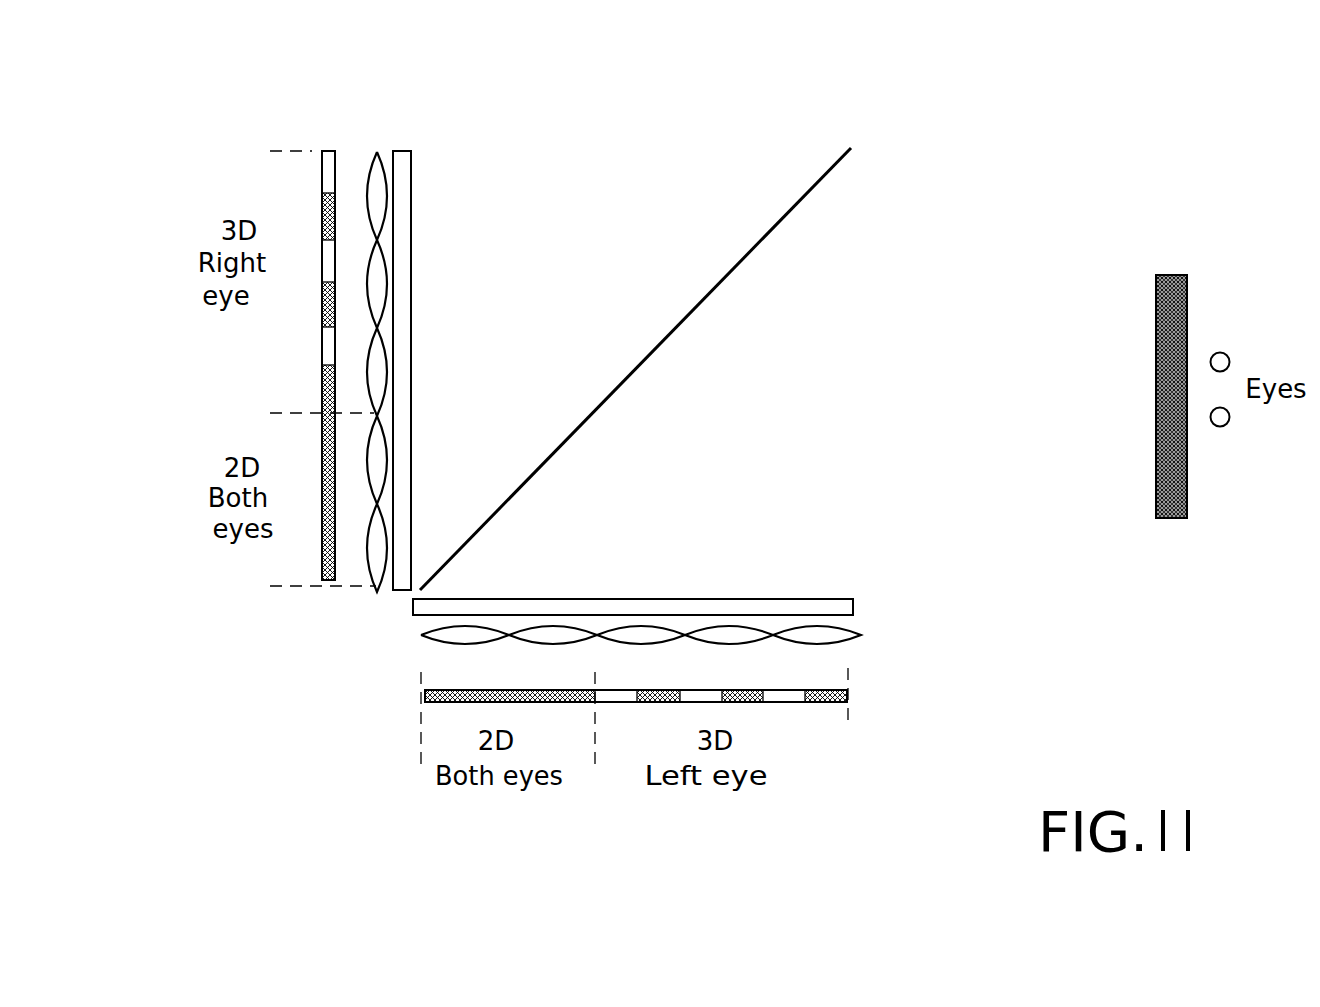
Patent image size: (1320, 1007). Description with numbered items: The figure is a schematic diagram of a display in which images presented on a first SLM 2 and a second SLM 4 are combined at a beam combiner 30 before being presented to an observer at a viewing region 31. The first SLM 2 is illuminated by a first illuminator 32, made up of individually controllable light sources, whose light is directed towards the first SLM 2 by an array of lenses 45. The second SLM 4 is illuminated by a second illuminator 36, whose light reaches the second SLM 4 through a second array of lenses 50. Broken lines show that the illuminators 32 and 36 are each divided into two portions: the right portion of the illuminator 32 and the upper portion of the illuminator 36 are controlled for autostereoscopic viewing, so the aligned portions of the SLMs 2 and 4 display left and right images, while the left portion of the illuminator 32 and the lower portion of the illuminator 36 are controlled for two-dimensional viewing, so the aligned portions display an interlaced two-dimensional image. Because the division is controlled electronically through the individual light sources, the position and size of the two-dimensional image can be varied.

The first spatial light modulator 2 is at (853, 600).
The second spatial light modulator 4 is at (408, 151).
The beam combiner 30 is at (818, 180).
The viewing region 31 is at (1168, 277).
The first illuminator 32 is at (848, 696).
The second illuminator 36 is at (330, 582).
The array of lenses 45 is at (858, 635).
The second array of lenses 50 is at (377, 152).